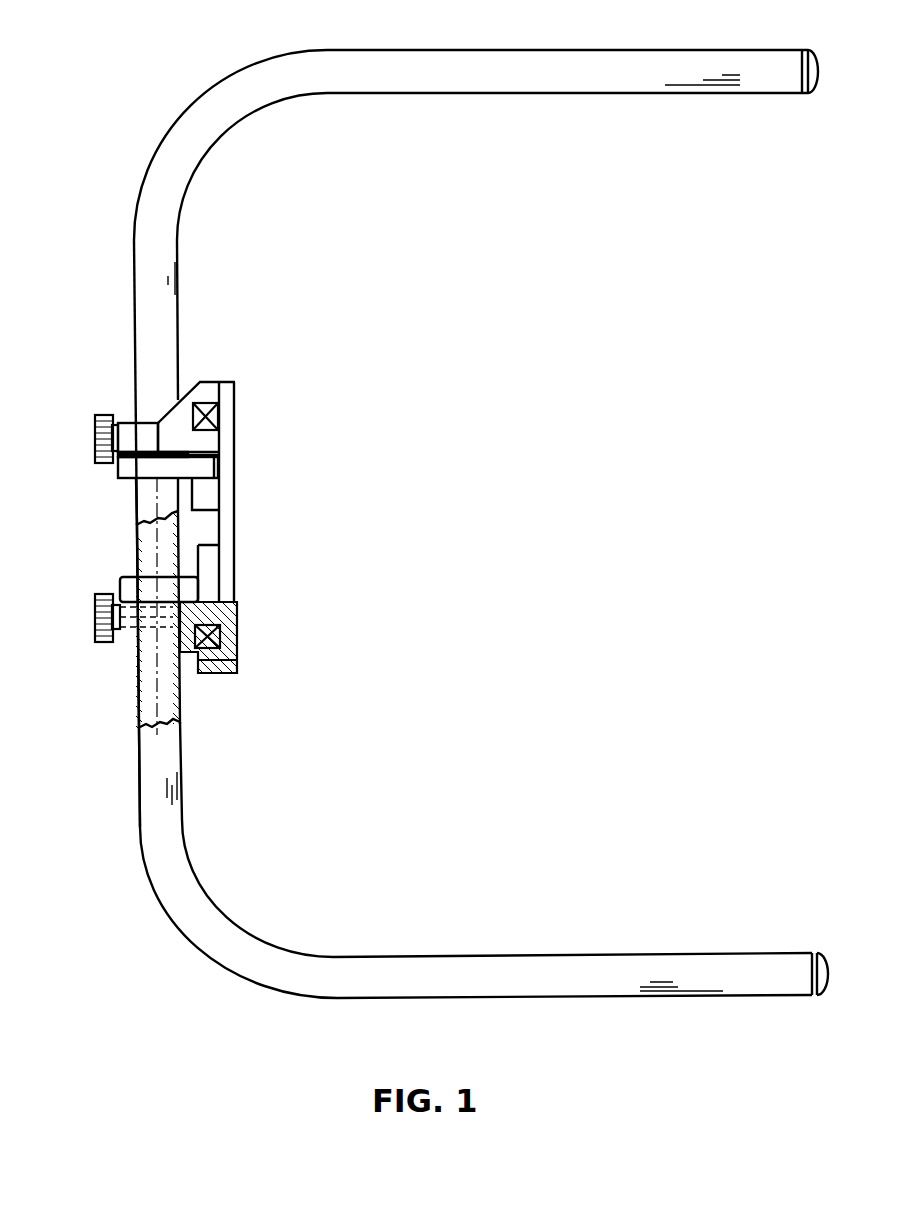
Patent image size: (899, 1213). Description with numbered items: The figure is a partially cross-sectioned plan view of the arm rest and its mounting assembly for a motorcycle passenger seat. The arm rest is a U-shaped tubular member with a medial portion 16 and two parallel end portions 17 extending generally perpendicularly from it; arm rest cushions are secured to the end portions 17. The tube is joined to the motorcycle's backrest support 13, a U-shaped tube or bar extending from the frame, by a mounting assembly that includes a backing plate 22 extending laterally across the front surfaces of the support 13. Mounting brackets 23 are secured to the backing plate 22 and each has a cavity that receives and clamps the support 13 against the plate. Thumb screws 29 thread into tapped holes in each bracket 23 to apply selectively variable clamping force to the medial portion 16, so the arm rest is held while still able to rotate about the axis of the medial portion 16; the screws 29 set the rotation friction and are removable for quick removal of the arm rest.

The backrest support 13 is at (214, 418).
The medial portion 16 is at (178, 315).
The end portions 17 is at (551, 93).
The backing plate 22 is at (237, 447).
The mounting bracket 23 is at (177, 402).
The thumb screws 29 is at (95, 613).